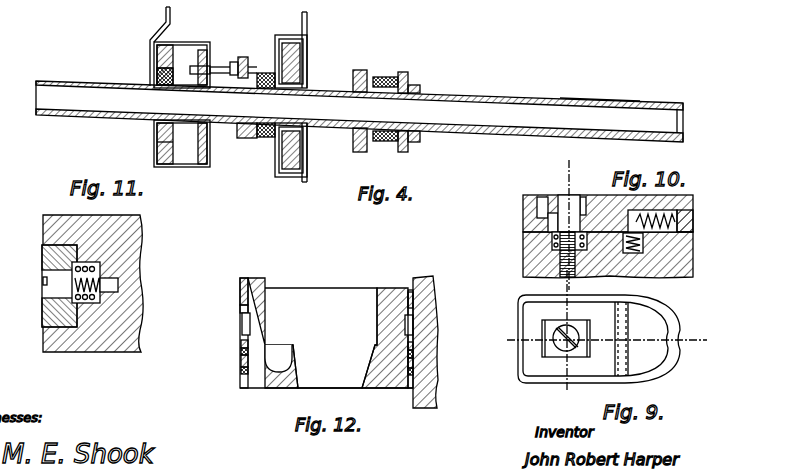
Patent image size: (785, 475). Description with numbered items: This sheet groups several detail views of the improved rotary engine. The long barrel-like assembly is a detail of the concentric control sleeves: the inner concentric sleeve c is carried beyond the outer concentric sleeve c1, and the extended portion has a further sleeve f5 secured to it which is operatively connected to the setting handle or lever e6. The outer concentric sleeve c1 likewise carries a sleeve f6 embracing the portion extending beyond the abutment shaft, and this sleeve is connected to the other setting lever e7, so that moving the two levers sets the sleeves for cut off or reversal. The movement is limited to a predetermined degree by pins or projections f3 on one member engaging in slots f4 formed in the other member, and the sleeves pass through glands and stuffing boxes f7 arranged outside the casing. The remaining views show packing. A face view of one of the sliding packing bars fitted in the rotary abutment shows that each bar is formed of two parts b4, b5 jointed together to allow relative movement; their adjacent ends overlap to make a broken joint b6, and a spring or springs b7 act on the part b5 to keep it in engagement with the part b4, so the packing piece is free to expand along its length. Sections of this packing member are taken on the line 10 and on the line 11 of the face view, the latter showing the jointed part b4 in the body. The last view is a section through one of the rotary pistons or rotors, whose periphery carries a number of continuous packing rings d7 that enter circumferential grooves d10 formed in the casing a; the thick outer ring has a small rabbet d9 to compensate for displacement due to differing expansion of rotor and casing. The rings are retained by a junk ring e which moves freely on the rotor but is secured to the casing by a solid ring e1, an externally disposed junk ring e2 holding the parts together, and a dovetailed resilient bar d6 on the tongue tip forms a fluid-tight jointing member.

In FIG. 4, the inner concentric sleeve c is at (128, 108).
In FIG. 4, the outer concentric sleeve c1 is at (590, 101).
In FIG. 4, the slots f4 is at (212, 47).
In FIG. 4, the sleeve f5 is at (150, 82).
In FIG. 4, the pins or projections f3 is at (228, 64).
In FIG. 4, the sleeve f6 is at (331, 87).
In FIG. 4, the glands and stuffing boxes f7 is at (384, 78).
In FIG. 4, the setting lever e6 is at (164, 13).
In FIG. 12, the setting lever e6 is at (240, 290).
In FIG. 4, the setting lever e7 is at (301, 16).
In FIG. 12, the junk ring e is at (245, 322).
In FIG. 12, the solid ring e1 is at (244, 333).
In FIG. 12, the external junk ring e2 is at (413, 300).
In FIG. 12, the dovetailed resilient bar d6 is at (244, 366).
In FIG. 12, the packing rings d7 is at (244, 346).
In FIG. 12, the rabbet d9 is at (244, 376).
In FIG. 12, the circumferential grooves d10 is at (244, 355).
In FIG. 12, the outer casing a is at (435, 345).
In FIG. 11, the part of packing bar b4 is at (63, 308).
In FIG. 10, the part of packing bar b4 is at (524, 198).
In FIG. 9, the part of packing bar b4 is at (525, 305).
In FIG. 10, the part of packing bar b5 is at (660, 198).
In FIG. 9, the part of packing bar b5 is at (658, 320).
In FIG. 10, the broken joint b6 is at (621, 198).
In FIG. 9, the broken joint b6 is at (630, 365).
In FIG. 10, the springs b7 is at (693, 214).
In FIG. 9, the section line 10- 10 is at (607, 340).
In FIG. 10, the section line 11- 11 is at (569, 225).
In FIG. 9, the section line 11- 11 is at (566, 344).